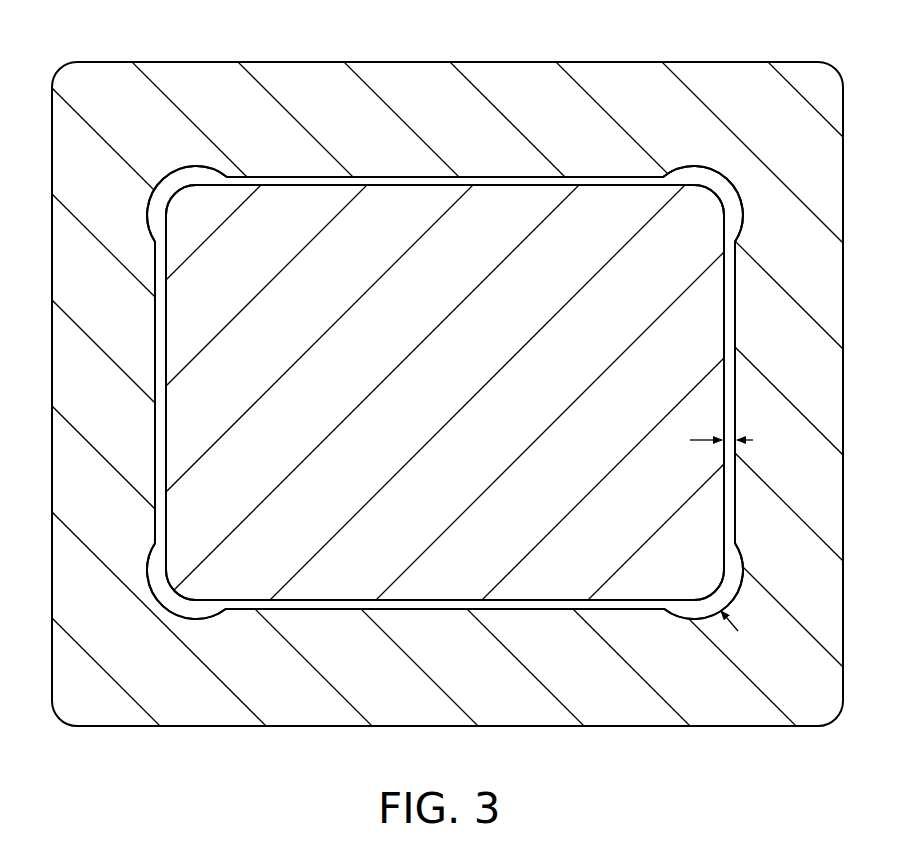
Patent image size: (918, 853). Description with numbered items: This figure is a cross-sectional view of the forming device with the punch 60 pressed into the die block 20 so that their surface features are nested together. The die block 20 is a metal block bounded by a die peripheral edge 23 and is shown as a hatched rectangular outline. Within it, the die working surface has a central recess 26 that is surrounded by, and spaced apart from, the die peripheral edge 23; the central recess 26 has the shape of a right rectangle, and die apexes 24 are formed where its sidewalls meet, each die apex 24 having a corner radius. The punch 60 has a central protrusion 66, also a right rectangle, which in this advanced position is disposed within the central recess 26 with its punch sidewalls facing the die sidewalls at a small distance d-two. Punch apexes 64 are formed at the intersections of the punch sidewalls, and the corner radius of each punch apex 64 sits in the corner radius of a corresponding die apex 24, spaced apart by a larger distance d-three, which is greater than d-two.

The die block 20 is at (452, 74).
The die peripheral edge 23 is at (270, 62).
The punch 60 is at (595, 195).
The central protrusion 66 is at (465, 386).
The die apex 24 is at (186, 178).
The punch apex 64 is at (178, 190).
The central recess 26 is at (291, 601).